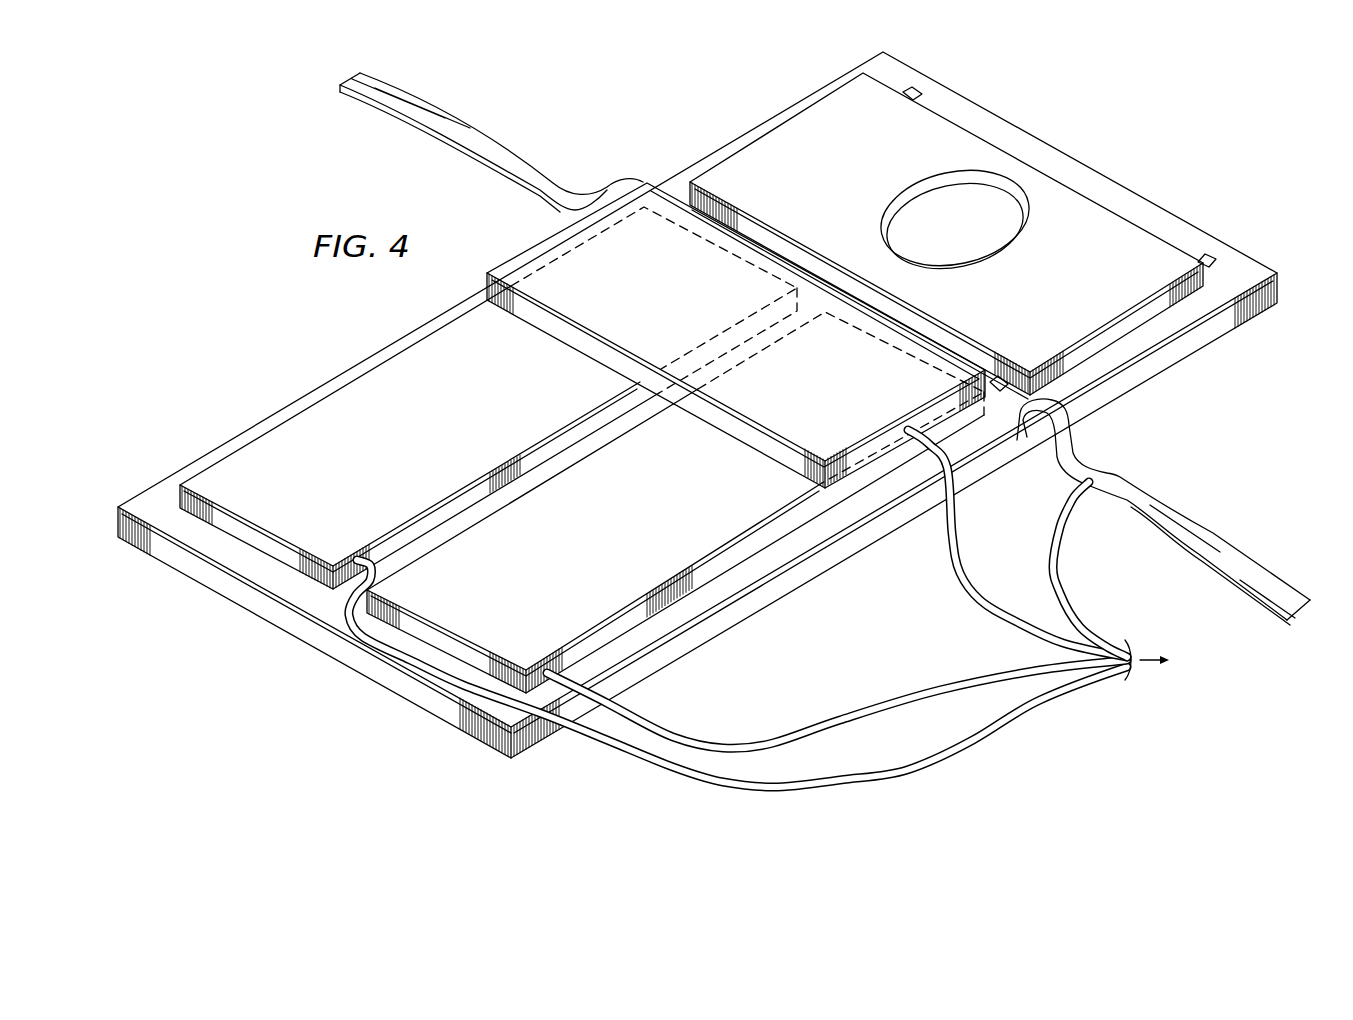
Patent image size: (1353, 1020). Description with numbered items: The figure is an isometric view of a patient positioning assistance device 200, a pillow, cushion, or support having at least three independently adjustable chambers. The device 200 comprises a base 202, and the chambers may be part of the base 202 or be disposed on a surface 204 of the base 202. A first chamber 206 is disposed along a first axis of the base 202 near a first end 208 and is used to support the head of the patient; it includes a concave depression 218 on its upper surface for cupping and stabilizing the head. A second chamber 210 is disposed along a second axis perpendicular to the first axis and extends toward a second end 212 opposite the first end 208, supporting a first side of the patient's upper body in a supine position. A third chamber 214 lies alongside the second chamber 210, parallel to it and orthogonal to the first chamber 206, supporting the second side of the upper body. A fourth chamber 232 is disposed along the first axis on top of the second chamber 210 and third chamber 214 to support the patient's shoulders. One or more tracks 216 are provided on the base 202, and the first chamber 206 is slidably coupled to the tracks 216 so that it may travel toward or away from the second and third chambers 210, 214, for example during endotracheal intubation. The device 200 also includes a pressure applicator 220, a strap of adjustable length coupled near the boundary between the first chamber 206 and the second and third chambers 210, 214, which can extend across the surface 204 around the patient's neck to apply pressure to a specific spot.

The patient positioning assistance device 200 is at (631, 100).
The base 202 is at (148, 553).
The surface 204 is at (1088, 178).
The first chamber 206 is at (846, 188).
The first end 208 is at (1162, 206).
The second chamber 210 is at (429, 445).
The second end 212 is at (332, 652).
The third chamber 214 is at (613, 547).
The track 216 is at (925, 92).
The concave depression 218 is at (940, 192).
The pressure applicator 220 is at (470, 133).
The fourth chamber 232 is at (864, 391).